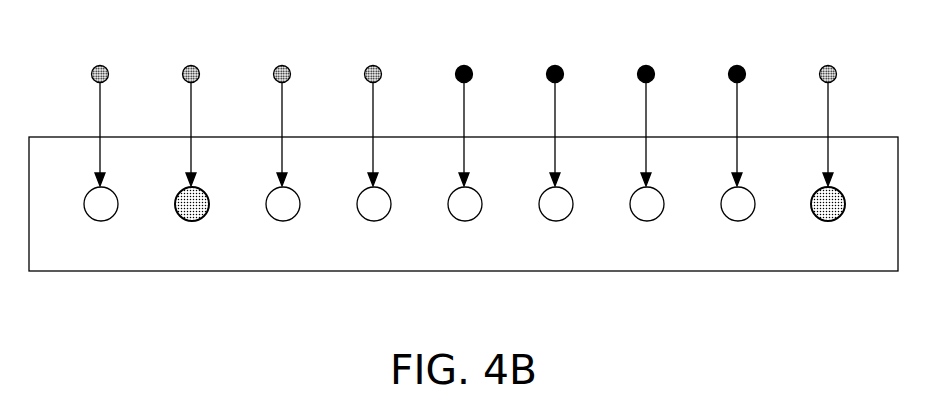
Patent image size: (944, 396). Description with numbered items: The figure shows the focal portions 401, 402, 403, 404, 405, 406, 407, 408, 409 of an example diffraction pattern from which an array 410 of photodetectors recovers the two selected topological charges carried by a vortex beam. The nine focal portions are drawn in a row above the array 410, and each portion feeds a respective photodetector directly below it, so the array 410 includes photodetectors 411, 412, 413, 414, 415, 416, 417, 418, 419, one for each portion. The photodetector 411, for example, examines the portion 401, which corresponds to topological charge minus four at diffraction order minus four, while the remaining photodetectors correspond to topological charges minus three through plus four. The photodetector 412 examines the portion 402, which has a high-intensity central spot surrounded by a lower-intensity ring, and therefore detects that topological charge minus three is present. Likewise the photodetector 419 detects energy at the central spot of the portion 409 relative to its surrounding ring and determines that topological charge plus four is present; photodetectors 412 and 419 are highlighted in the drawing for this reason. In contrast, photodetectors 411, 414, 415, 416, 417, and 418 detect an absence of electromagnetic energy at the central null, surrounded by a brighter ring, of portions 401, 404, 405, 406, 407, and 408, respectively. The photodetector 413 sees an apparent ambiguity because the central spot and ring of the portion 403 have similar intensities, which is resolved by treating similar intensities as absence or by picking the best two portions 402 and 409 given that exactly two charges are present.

The focal portion 401 is at (91, 74).
The focal portion 402 is at (182, 74).
The focal portion 403 is at (273, 74).
The focal portion 404 is at (364, 74).
The focal portion 405 is at (455, 74).
The focal portion 406 is at (546, 74).
The focal portion 407 is at (637, 74).
The focal portion 408 is at (728, 74).
The focal portion 409 is at (819, 74).
The array of photodetectors 410 is at (56, 137).
The photodetector 411 is at (84, 205).
The photodetector 412 is at (175, 205).
The photodetector 413 is at (266, 205).
The photodetector 414 is at (357, 205).
The photodetector 415 is at (448, 205).
The photodetector 416 is at (539, 205).
The photodetector 417 is at (630, 205).
The photodetector 418 is at (721, 205).
The photodetector 419 is at (811, 205).